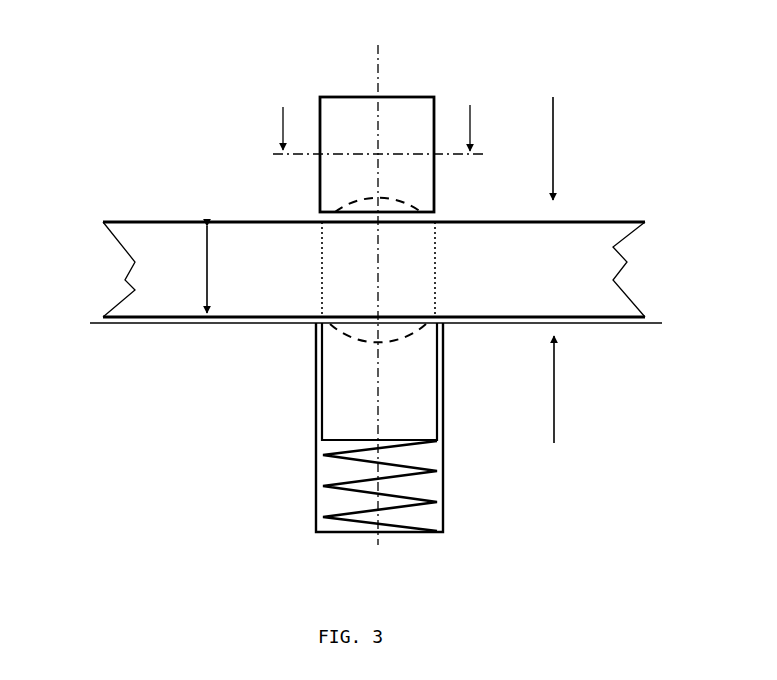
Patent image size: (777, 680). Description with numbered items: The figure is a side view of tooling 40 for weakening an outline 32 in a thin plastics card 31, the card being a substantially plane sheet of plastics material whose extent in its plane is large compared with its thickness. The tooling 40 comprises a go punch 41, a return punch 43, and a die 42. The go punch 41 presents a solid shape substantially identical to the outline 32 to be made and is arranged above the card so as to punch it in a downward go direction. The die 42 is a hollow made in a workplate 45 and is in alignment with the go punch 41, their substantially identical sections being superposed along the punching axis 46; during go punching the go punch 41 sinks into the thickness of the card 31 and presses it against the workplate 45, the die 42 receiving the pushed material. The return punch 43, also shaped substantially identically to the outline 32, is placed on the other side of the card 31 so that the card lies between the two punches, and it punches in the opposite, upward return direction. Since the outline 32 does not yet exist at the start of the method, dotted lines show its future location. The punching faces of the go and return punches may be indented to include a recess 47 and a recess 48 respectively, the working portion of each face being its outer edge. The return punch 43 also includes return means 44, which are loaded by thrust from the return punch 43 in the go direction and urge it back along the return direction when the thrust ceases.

The thin plastics card 31 is at (170, 222).
The outline 32 is at (436, 263).
The tooling 40 is at (153, 74).
The go punch 41 is at (345, 105).
The die 42 is at (315, 342).
The return punch 43 is at (335, 383).
The return means 44 is at (340, 493).
The workplate 45 is at (178, 323).
The punching axis 46 is at (376, 52).
The recess 47 is at (352, 203).
The recess 48 is at (398, 340).